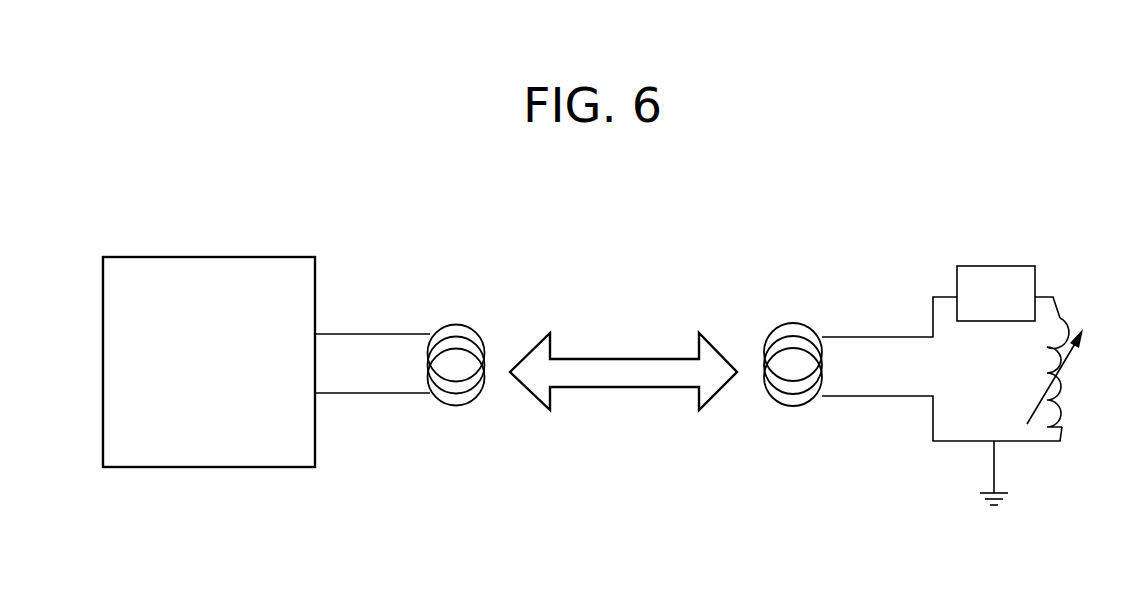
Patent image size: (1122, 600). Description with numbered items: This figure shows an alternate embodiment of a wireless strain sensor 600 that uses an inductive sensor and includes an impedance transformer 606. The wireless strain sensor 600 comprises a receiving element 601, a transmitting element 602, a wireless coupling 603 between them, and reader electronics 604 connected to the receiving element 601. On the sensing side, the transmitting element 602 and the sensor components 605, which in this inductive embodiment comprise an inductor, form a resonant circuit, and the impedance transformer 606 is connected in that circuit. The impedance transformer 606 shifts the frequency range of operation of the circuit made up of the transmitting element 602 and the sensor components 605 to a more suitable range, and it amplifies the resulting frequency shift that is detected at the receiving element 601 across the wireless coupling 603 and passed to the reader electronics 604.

The wireless strain sensor 600 is at (260, 205).
The receiving element 601 is at (447, 325).
The transmitting element 602 is at (793, 323).
The wireless coupling 603 is at (658, 388).
The reader electronics 604 is at (167, 469).
The sensor components 605 is at (1020, 373).
The impedance transformer 606 is at (1007, 266).